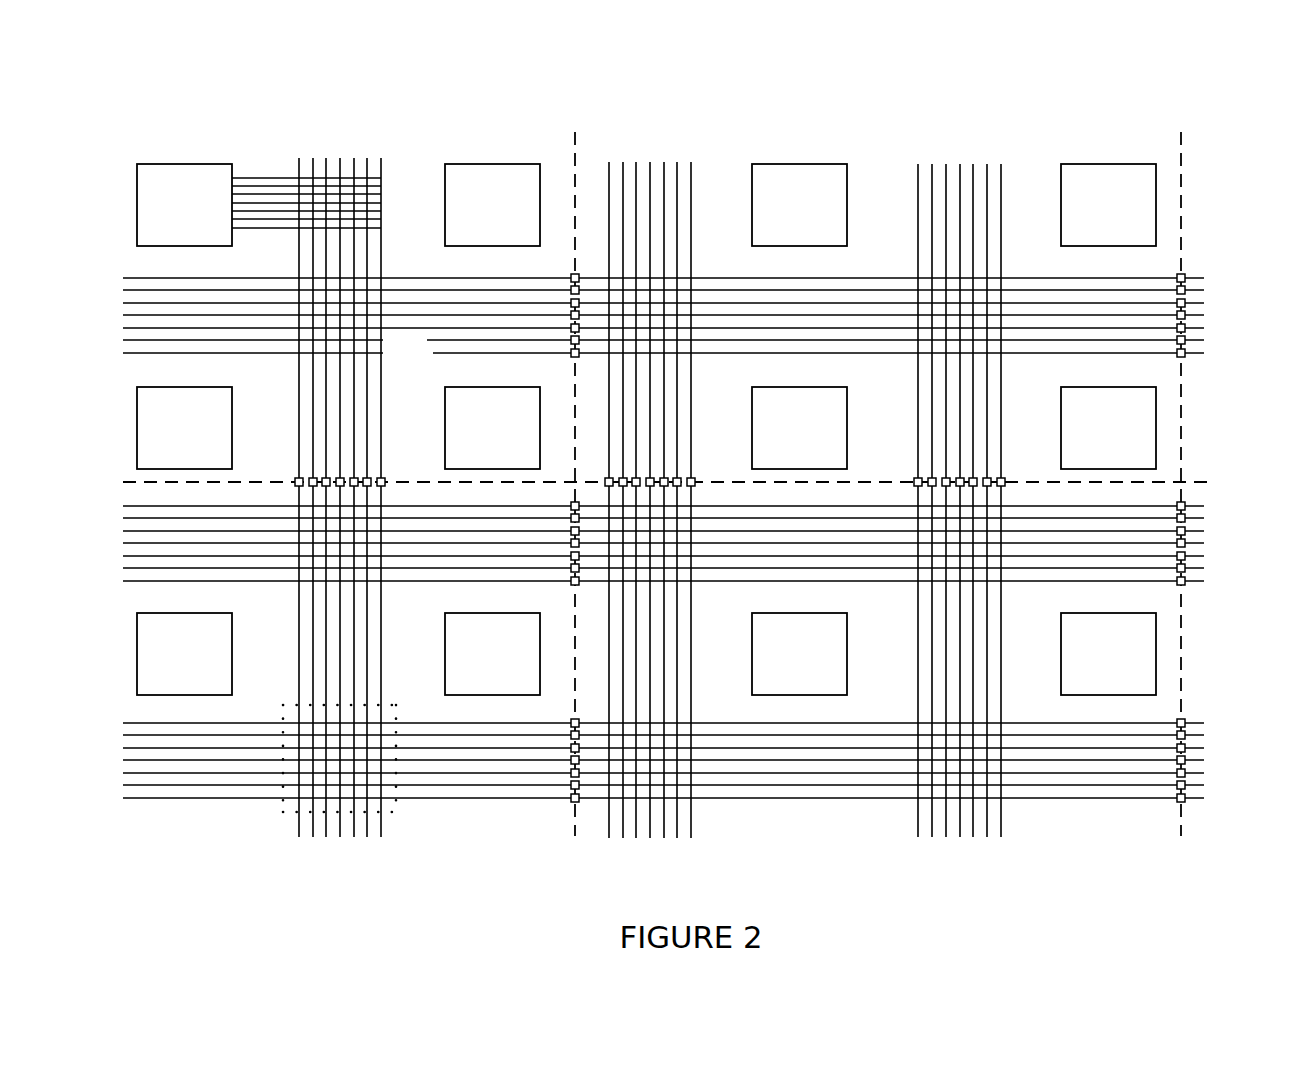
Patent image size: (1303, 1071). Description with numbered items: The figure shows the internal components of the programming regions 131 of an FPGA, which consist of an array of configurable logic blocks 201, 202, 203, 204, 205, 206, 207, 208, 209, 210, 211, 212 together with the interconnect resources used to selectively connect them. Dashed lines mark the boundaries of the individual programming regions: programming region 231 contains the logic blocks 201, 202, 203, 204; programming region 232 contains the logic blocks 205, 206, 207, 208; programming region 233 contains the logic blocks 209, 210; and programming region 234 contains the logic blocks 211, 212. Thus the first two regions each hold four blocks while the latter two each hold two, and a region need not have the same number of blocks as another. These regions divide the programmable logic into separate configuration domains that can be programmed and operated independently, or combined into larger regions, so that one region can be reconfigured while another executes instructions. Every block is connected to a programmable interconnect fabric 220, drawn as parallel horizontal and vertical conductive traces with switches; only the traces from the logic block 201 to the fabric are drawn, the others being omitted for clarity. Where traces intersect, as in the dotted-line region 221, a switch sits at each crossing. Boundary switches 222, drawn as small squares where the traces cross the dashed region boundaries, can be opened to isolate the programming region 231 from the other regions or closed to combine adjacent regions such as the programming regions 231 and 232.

The programming regions 131 is at (1124, 58).
The configurable logic block 201 is at (168, 215).
The configurable logic block 202 is at (476, 215).
The configurable logic block 203 is at (168, 438).
The configurable logic block 204 is at (476, 438).
The configurable logic block 205 is at (783, 215).
The configurable logic block 206 is at (1092, 215).
The configurable logic block 207 is at (783, 438).
The configurable logic block 208 is at (1092, 438).
The configurable logic block 209 is at (168, 664).
The configurable logic block 210 is at (476, 664).
The configurable logic block 211 is at (783, 664).
The configurable logic block 212 is at (1092, 664).
The programmable interconnect fabric 220 is at (663, 436).
The region of switches 221 is at (270, 820).
The boundary switches 222 is at (525, 316).
The programming region 231 is at (341, 90).
The programming region 232 is at (909, 91).
The programming region 233 is at (341, 883).
The programming region 234 is at (909, 883).